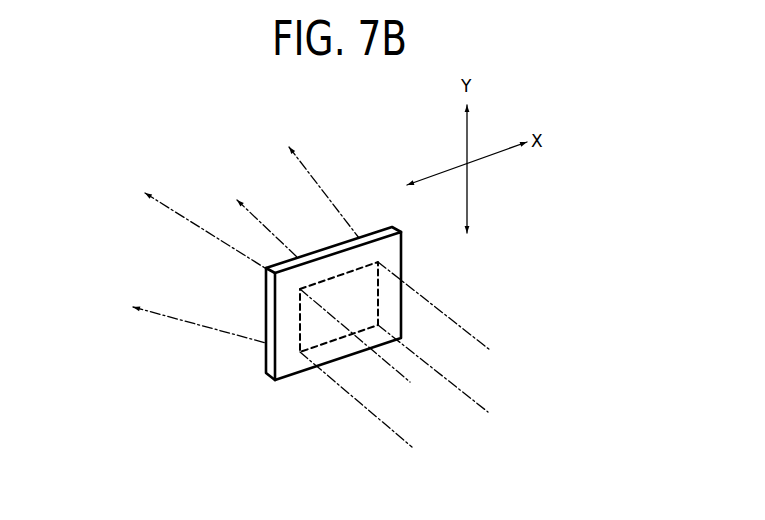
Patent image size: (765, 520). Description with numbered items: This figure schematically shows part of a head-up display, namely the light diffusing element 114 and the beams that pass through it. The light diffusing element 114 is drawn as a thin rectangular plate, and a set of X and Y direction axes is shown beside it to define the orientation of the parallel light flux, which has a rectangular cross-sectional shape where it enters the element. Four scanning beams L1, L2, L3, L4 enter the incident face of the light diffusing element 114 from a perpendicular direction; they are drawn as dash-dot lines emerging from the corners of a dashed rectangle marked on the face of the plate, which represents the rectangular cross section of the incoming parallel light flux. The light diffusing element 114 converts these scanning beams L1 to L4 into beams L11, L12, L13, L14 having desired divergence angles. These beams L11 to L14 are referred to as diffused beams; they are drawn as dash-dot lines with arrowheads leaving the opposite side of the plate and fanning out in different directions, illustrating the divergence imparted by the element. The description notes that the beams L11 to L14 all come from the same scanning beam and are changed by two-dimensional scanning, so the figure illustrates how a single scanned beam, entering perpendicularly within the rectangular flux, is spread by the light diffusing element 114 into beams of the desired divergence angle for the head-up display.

The light diffusing element 114 is at (267, 378).
The scanning beam L1 is at (406, 373).
The scanning beam L2 is at (460, 331).
The scanning beam L3 is at (391, 424).
The scanning beam L4 is at (480, 410).
The diffused beam L11 is at (199, 223).
The diffused beam L12 is at (310, 180).
The diffused beam L13 is at (191, 318).
The diffused beam L14 is at (273, 240).